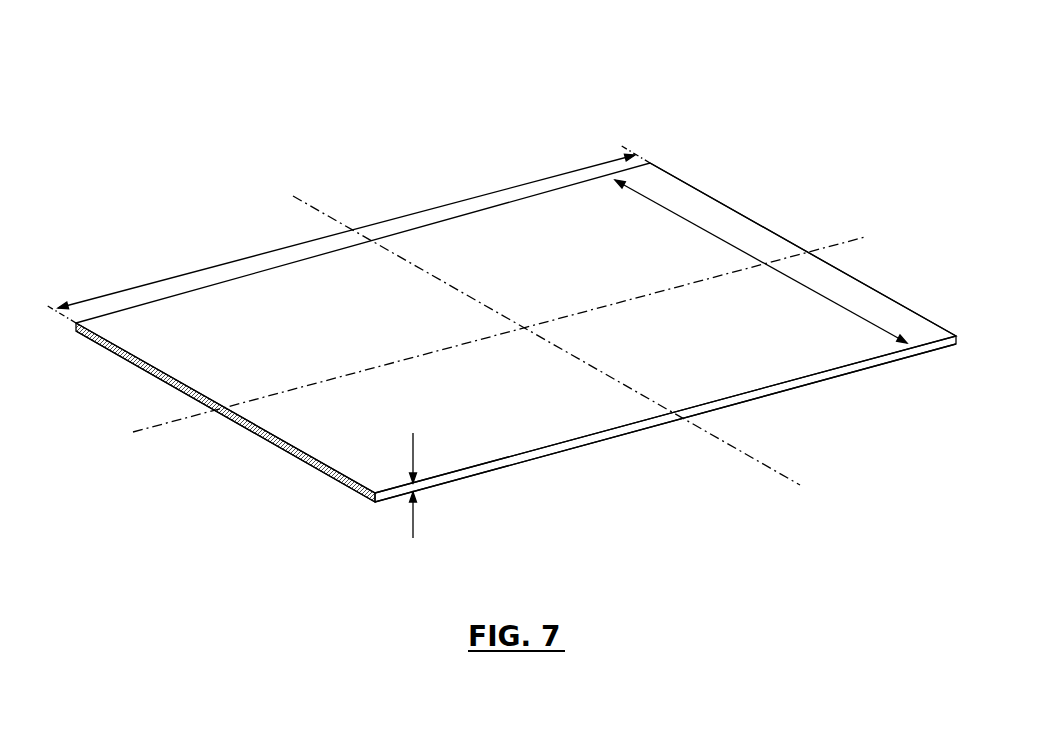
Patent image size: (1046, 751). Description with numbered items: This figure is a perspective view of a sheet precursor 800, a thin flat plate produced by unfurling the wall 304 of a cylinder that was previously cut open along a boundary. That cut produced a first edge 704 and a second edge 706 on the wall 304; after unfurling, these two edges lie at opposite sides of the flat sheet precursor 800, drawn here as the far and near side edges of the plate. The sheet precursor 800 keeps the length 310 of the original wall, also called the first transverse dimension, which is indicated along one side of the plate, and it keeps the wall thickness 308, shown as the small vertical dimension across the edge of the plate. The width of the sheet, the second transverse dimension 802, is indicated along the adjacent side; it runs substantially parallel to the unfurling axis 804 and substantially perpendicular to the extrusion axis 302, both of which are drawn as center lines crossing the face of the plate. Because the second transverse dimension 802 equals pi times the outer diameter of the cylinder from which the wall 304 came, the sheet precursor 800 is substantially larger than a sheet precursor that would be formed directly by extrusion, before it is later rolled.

The sheet precursor 800 is at (728, 121).
The second transverse dimension 802 is at (210, 265).
The first edge 704 is at (745, 214).
The thickness 308 is at (414, 499).
The extrusion axis 302 is at (740, 452).
The unfurling axis 804 is at (185, 418).
The length 310 is at (857, 316).
The wall 304 is at (830, 372).
The second edge 706 is at (265, 448).